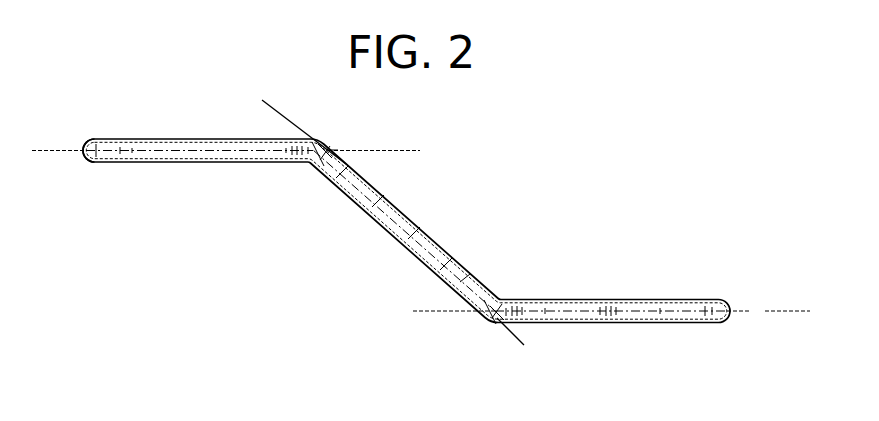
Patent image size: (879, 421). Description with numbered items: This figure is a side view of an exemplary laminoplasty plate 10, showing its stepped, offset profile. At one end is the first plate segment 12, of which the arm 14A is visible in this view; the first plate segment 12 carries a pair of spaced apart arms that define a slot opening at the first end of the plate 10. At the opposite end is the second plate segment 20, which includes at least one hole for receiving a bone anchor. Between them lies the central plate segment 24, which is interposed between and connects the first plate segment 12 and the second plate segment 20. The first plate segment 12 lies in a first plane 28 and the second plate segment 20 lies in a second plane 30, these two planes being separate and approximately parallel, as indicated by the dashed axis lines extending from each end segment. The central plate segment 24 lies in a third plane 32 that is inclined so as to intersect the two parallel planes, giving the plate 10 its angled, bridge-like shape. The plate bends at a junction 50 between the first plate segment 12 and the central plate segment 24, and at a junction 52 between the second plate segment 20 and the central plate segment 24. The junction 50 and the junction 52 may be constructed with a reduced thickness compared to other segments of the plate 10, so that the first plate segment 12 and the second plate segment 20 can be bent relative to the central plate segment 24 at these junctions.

The laminoplasty plate 10 is at (466, 206).
The first plate segment 12 is at (182, 163).
The arm 14A is at (103, 163).
The second plate segment 20 is at (625, 305).
The central plate segment 24 is at (395, 238).
The first plane 28 is at (384, 150).
The second plane 30 is at (784, 310).
The third plane 32 is at (524, 345).
The junction 50 is at (310, 165).
The junction 52 is at (502, 298).